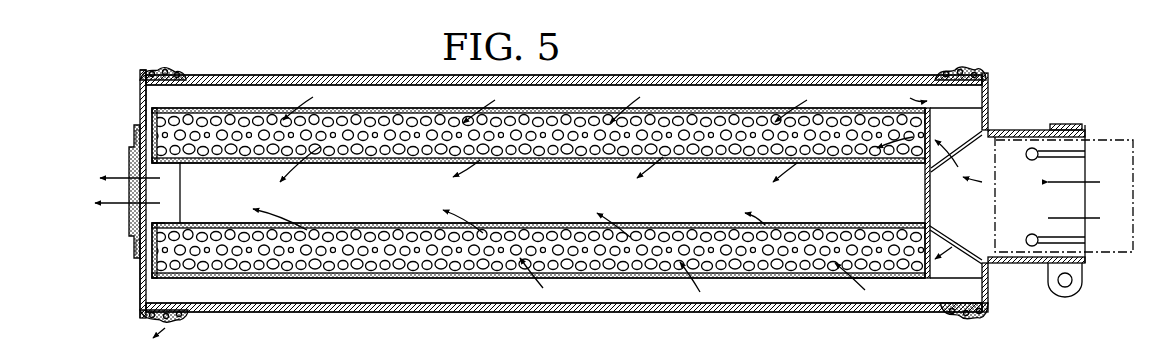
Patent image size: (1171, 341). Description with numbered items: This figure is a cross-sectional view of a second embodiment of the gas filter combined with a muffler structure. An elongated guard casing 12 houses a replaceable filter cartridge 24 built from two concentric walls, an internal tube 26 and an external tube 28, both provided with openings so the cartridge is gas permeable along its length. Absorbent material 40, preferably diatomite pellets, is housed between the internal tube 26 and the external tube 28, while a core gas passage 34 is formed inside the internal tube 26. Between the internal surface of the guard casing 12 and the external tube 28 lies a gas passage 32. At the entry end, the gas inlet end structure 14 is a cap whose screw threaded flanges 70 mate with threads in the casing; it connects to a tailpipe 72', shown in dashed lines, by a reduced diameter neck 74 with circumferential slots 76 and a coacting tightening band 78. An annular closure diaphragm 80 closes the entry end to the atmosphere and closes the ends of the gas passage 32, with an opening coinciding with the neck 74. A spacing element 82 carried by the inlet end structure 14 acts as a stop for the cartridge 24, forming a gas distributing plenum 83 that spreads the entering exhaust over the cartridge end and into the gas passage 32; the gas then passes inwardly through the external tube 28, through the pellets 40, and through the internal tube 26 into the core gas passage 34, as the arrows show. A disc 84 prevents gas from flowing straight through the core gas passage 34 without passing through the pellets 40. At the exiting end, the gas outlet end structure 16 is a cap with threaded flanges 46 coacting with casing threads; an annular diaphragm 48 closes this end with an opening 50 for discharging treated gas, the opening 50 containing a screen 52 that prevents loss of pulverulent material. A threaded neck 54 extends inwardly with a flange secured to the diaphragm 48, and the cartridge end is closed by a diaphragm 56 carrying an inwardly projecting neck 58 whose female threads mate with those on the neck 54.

The guard casing 12 is at (600, 74).
The gas inlet end structure 14 is at (990, 98).
The gas outlet end structure 16 is at (115, 122).
The filter cartridge 24 is at (885, 281).
The internal tube 26 is at (347, 223).
The external tube 28 is at (243, 277).
The gas passage 32 is at (703, 93).
The core gas passage 34 is at (566, 201).
The absorbent material 40 is at (731, 227).
The threaded flanges 46 is at (163, 72).
The annular diaphragm 48 is at (135, 270).
The opening 50 is at (145, 192).
The screen 52 is at (127, 167).
The threaded neck 54 is at (158, 223).
The diaphragm 56 is at (142, 128).
The inwardly projecting neck 58 is at (178, 147).
The screw threaded flanges 70 is at (967, 75).
The tailpipe 72' is at (1064, 166).
The reduced diameter neck 74 is at (1036, 265).
The circumferential slots 76 is at (1065, 158).
The tightening band 78 is at (1065, 297).
The annular closure diaphragm 80 is at (988, 295).
The spacing element 82 is at (970, 236).
The gas distributing plenum 83 is at (956, 143).
The disc 84 is at (935, 208).